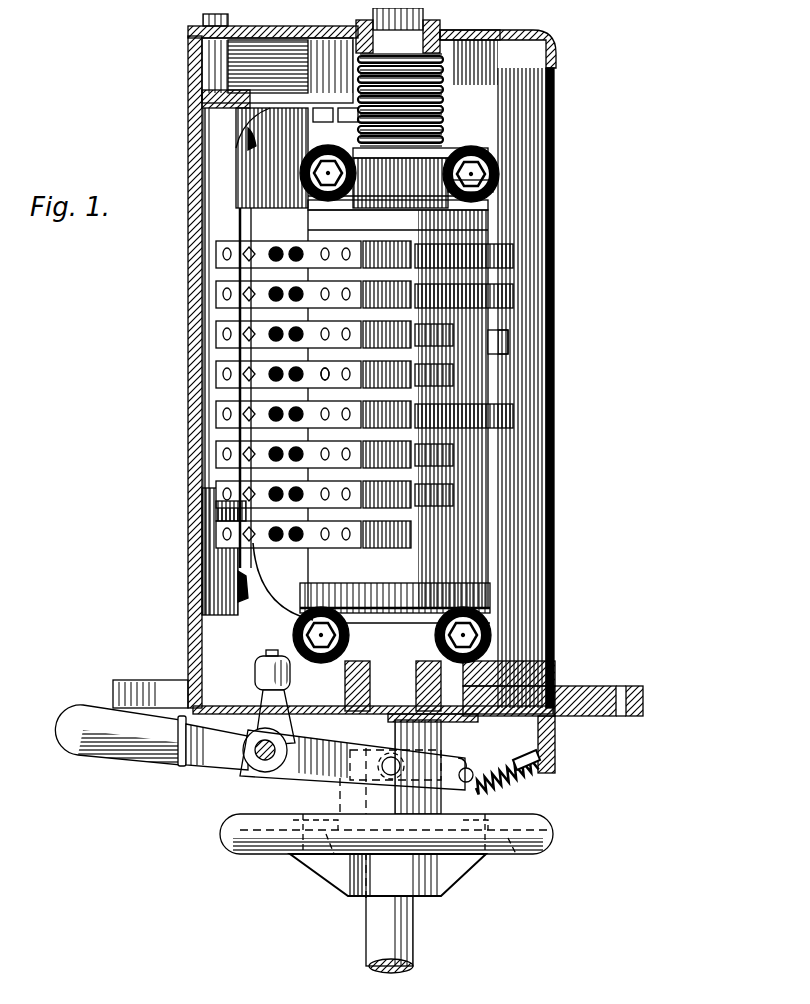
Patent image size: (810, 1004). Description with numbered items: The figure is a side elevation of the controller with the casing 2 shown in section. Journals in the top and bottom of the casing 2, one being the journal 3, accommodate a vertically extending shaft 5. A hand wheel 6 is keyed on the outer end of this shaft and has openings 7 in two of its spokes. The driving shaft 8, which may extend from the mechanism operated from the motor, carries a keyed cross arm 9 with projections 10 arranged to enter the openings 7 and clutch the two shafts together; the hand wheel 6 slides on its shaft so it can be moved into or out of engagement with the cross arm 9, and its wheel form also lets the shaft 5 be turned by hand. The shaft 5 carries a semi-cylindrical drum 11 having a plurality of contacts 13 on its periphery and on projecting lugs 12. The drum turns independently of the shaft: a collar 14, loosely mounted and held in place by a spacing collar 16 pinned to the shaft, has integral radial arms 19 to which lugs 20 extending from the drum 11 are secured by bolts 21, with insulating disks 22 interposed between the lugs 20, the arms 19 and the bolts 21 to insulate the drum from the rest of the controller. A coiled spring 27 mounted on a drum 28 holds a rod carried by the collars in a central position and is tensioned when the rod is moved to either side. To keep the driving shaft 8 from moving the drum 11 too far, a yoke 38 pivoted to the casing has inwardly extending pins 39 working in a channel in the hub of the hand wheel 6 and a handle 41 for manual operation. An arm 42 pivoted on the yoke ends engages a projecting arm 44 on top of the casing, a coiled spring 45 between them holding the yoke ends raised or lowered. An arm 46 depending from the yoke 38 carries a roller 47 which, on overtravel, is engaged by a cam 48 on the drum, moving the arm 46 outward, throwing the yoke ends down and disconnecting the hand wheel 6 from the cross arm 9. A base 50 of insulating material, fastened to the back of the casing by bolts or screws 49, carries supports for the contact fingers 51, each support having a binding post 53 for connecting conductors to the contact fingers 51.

The casing 2 is at (182, 550).
The journal 3 is at (415, 47).
The shaft 5 is at (390, 712).
The hand wheel 6 is at (542, 843).
The openings 7 is at (325, 822).
The driving shaft 8 is at (397, 935).
The cross arm 9 is at (370, 877).
The projections 10 is at (270, 868).
The drum 11 is at (472, 224).
The projecting lugs 12 is at (485, 340).
The contacts 13 is at (500, 250).
The collar 14 is at (462, 180).
The spacing collar 16 is at (468, 143).
The radial arms 19 is at (232, 596).
The lugs 20 is at (445, 205).
The bolts 21 is at (462, 163).
The insulating disks 22 is at (440, 187).
The coiled spring 27 is at (445, 110).
The drum 28 is at (455, 45).
The yoke 38 is at (345, 768).
The pins 39 is at (428, 752).
The handle 41 is at (118, 750).
The arm 42 is at (473, 768).
The projecting arm 44 is at (547, 727).
The coiled spring 45 is at (518, 768).
The arm 46 is at (260, 700).
The roller 47 is at (280, 665).
The cam 48 is at (498, 666).
The bolts or screws 49 is at (247, 132).
The base 50 is at (212, 500).
The contact fingers 51 is at (318, 364).
The binding post 53 is at (318, 236).